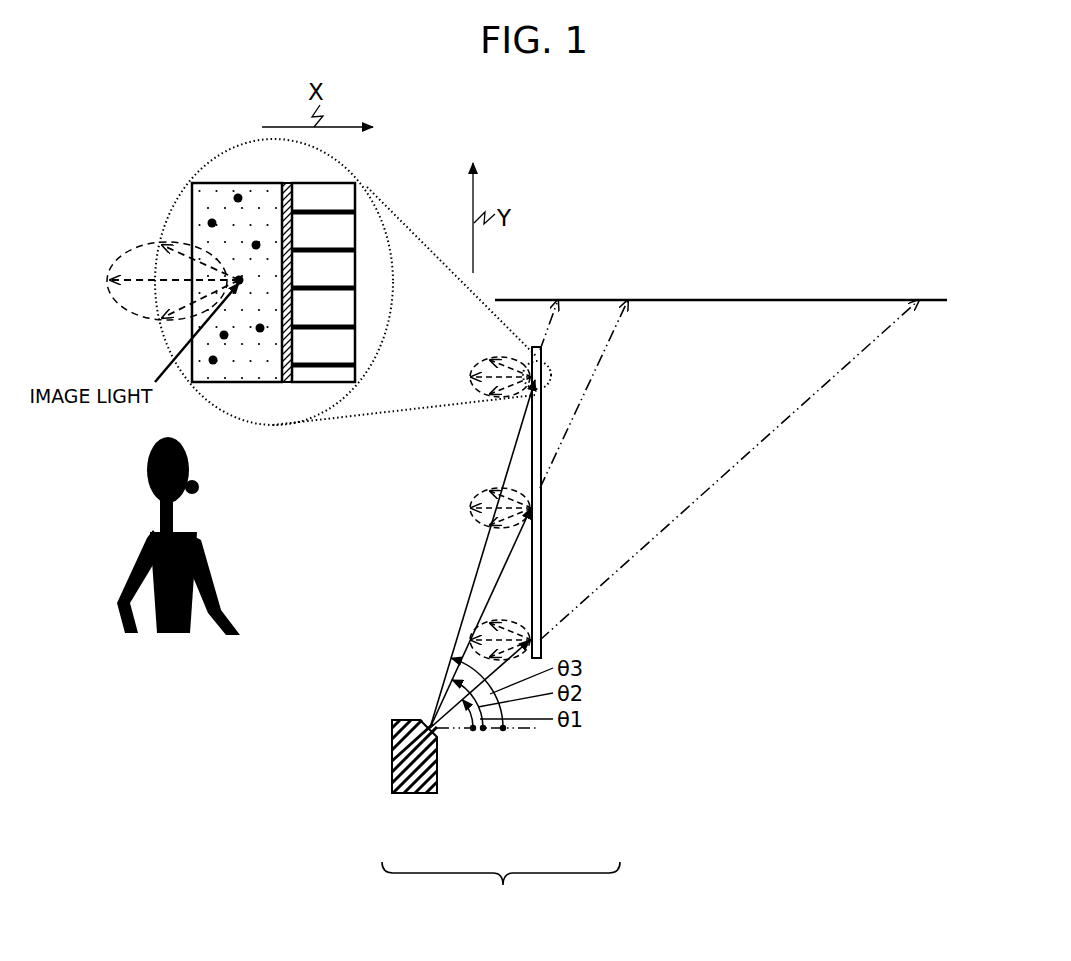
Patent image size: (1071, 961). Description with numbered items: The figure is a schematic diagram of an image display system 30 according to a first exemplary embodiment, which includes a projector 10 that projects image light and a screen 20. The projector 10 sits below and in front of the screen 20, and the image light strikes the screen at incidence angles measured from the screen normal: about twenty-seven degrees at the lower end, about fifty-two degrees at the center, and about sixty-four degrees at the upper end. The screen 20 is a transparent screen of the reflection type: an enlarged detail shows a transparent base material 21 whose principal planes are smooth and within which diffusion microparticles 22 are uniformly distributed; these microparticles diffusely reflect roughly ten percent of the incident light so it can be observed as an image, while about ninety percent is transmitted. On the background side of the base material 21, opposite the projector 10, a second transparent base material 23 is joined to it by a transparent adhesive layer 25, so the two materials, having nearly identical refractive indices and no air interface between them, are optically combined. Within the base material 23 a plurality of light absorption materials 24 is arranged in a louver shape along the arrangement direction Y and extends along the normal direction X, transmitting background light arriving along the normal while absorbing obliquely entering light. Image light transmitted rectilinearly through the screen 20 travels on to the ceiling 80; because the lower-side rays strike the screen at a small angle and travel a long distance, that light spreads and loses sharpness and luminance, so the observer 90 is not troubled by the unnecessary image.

The projector 10 is at (420, 793).
The screen 20 is at (541, 560).
The base material 21 is at (192, 197).
The diffusion microparticles 22 is at (208, 223).
The base material 23 is at (345, 198).
The light absorption materials 24 is at (338, 325).
The transparent adhesive layer 25 is at (282, 198).
The image display system 30 is at (501, 897).
The ceiling 80 is at (708, 300).
The observer 90 is at (197, 566).